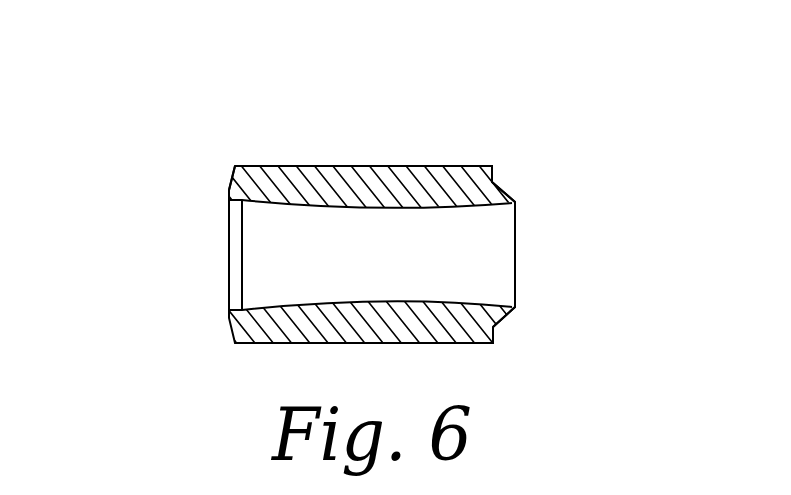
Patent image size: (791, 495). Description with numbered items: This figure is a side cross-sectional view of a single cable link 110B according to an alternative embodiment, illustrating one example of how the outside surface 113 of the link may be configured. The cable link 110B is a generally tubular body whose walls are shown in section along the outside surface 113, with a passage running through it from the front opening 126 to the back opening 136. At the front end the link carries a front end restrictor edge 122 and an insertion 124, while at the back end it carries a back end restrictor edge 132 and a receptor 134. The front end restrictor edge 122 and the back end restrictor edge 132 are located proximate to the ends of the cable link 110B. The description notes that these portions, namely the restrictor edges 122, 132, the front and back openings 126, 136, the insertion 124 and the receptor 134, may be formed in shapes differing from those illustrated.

The cable link 110B is at (375, 98).
The outside surface 113 is at (440, 166).
The front end restrictor edge 122 is at (497, 175).
The insertion 124 is at (508, 190).
The front opening 126 is at (542, 260).
The back end restrictor edge 132 is at (236, 168).
The receptor 134 is at (232, 198).
The back opening 136 is at (212, 241).